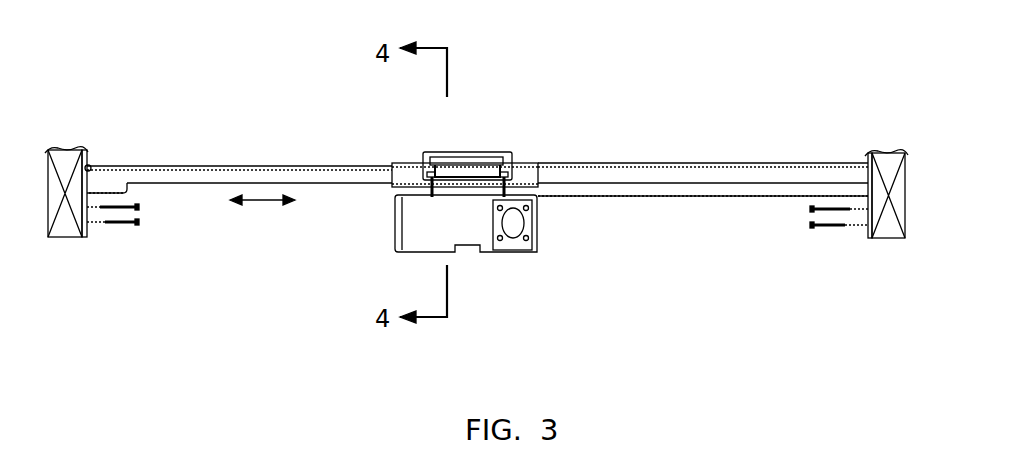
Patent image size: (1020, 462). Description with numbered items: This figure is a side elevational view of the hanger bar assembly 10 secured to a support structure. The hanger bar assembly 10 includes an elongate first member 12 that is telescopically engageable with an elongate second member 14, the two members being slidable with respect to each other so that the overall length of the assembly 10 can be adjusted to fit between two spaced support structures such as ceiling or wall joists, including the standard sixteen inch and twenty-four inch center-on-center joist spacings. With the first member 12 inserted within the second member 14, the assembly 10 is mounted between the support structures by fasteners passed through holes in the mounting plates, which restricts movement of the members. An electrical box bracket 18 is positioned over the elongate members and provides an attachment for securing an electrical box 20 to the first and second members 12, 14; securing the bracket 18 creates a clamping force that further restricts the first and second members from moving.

The hanger bar assembly 10 is at (292, 104).
The first member 12 is at (178, 166).
The second member 14 is at (675, 162).
The electrical box bracket 18 is at (470, 151).
The electrical box 20 is at (537, 252).